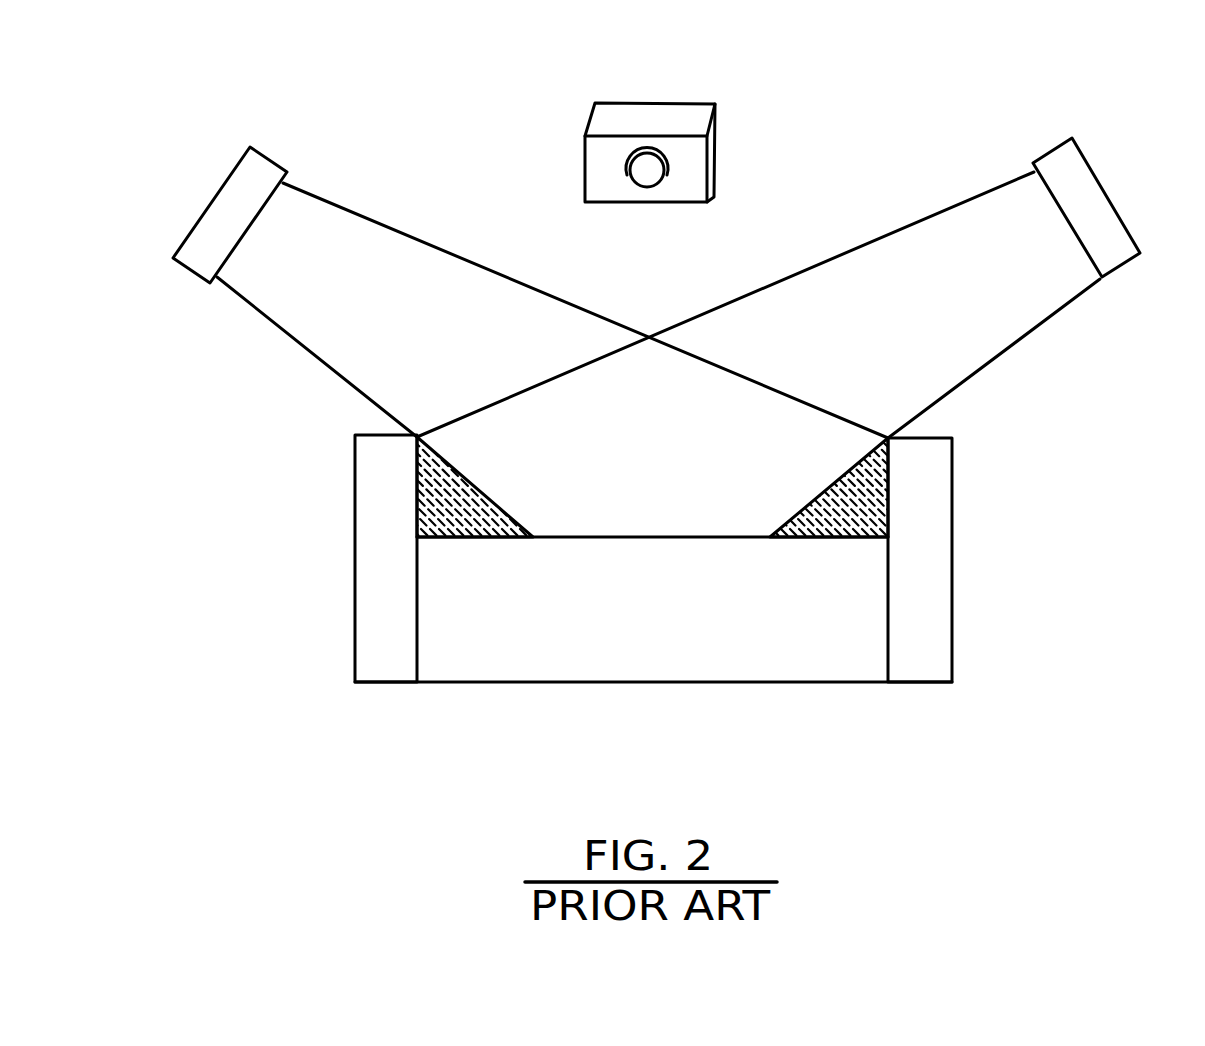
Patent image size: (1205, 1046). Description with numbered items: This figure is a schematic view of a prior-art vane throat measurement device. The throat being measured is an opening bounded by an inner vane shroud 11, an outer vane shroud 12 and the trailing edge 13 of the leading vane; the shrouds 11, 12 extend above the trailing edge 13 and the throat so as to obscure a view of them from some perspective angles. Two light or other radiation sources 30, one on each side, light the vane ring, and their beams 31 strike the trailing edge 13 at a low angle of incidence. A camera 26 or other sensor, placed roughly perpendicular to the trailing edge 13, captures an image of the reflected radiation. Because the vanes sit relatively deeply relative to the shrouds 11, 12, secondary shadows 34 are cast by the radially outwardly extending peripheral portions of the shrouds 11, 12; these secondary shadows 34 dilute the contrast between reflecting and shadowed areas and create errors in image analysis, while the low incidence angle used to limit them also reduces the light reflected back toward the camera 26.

The inner vane shroud 11 is at (952, 470).
The outer vane shroud 12 is at (355, 462).
The trailing edge 13 is at (627, 537).
The camera 26 is at (695, 122).
The light sources 30 is at (267, 155).
The light beam 31 is at (347, 230).
The secondary shadows 34 is at (440, 508).